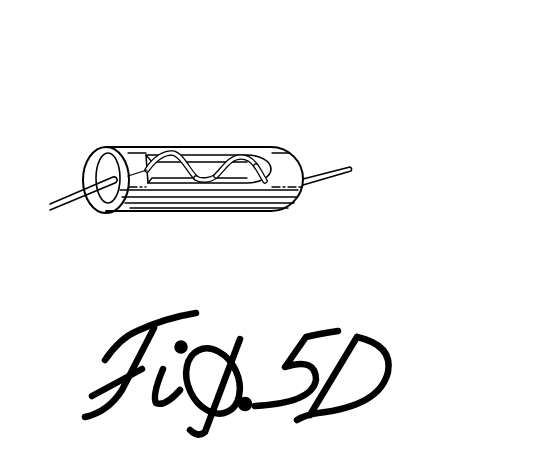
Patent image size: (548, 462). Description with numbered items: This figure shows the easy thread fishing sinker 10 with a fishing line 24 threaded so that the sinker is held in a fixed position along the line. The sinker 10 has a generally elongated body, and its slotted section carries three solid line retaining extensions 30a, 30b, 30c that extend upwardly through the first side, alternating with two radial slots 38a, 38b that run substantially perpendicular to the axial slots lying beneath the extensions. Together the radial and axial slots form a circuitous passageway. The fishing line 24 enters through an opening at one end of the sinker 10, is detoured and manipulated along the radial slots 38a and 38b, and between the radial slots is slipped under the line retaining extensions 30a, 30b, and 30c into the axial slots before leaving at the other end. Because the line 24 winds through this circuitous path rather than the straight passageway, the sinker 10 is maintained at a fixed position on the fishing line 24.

The fishing sinker 10 is at (201, 136).
The fishing line 24 is at (343, 167).
The line retaining extension 30a is at (172, 176).
The line retaining extension 30b is at (228, 154).
The line retaining extension 30c is at (236, 165).
The radial slot 38a is at (186, 135).
The radial slot 38b is at (229, 191).